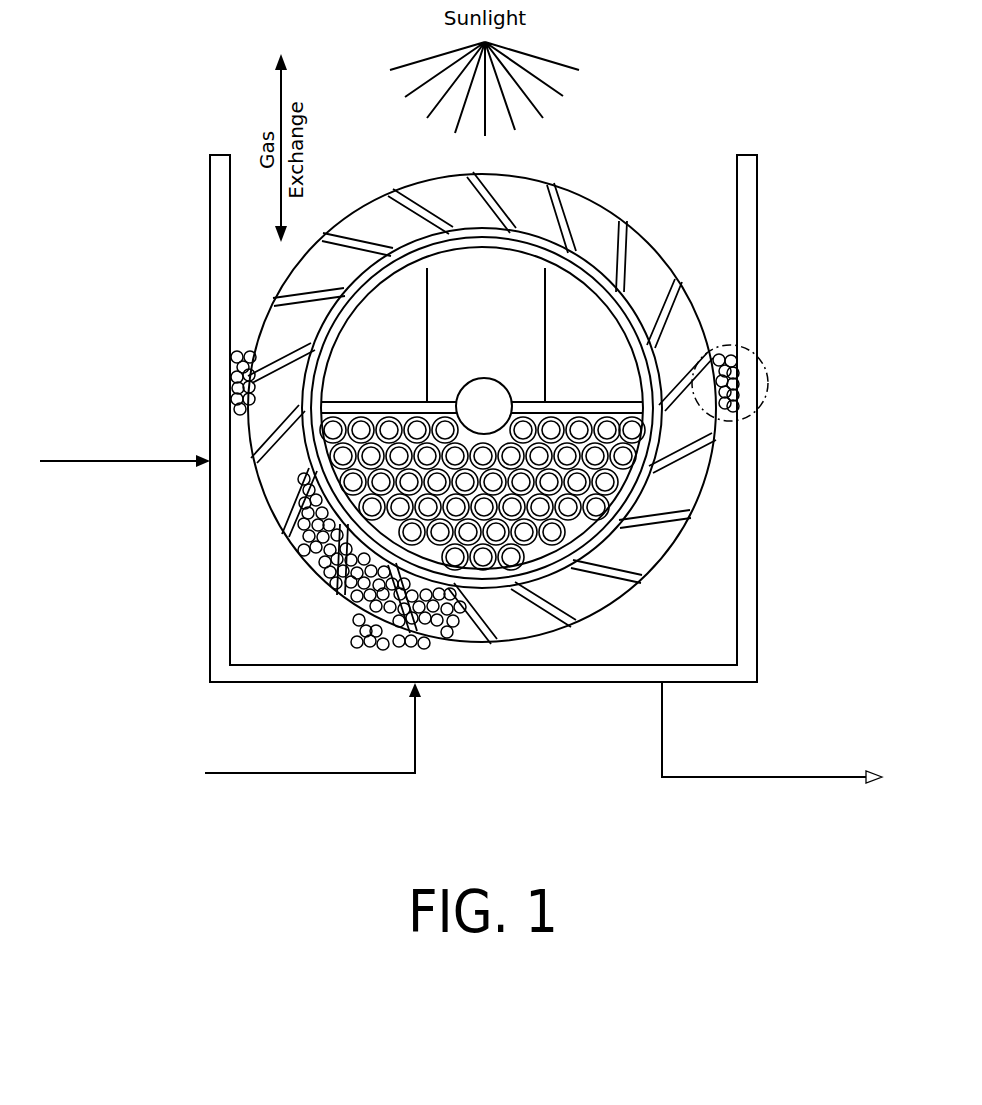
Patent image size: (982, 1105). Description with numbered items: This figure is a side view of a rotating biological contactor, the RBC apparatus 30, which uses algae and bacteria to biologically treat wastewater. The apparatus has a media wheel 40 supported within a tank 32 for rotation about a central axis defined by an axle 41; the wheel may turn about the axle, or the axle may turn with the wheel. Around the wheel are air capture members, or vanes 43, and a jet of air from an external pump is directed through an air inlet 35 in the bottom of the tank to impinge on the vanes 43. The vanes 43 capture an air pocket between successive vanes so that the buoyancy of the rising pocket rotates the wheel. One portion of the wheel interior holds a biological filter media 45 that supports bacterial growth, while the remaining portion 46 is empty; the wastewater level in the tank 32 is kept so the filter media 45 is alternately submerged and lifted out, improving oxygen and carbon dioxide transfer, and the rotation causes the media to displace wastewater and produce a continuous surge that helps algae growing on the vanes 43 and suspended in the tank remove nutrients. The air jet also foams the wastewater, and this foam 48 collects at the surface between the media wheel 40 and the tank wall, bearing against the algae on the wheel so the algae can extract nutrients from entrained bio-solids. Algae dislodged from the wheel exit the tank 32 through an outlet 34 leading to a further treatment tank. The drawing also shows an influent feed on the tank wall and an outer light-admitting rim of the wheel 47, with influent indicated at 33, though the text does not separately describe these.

The RBC apparatus 30 is at (199, 124).
The tank 32 is at (220, 197).
The influent inlet 33 is at (210, 460).
The outlet 34 is at (660, 683).
The air inlet 35 is at (418, 684).
The media wheel 40 is at (543, 396).
The axle 41 is at (483, 379).
The vanes 43 is at (693, 467).
The biological filter media 45 is at (343, 457).
The empty portion 46 is at (400, 312).
The outer drum wall 47 is at (518, 175).
The foam 48 is at (770, 380).